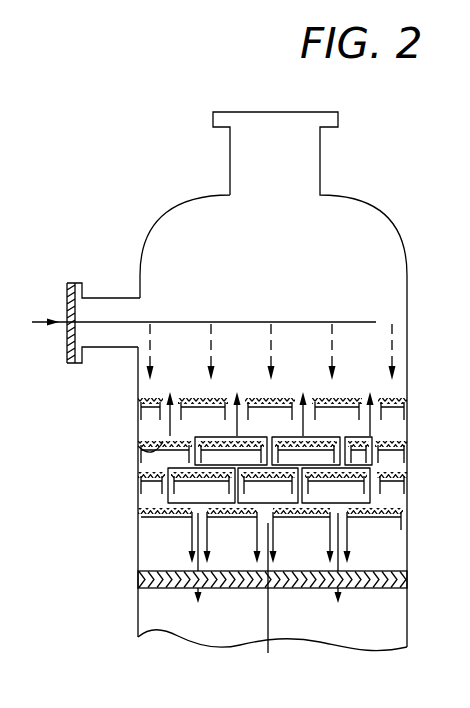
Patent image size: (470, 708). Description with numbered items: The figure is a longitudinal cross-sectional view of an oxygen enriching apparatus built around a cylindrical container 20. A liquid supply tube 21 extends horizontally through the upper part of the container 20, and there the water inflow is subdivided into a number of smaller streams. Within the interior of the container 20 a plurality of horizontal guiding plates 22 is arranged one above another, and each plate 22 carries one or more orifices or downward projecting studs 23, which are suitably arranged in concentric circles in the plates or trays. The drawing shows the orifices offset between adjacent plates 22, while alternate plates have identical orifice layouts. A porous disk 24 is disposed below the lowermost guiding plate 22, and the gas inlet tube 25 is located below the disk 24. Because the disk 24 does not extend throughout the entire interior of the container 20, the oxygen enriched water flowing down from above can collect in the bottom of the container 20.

The cylindrical container 20 is at (376, 212).
The liquid supply tube 21 is at (376, 320).
The horizontal guiding plates 22 is at (140, 488).
The downward projecting studs 23 is at (312, 399).
The porous disk 24 is at (384, 572).
The gas inlet tube 25 is at (146, 588).